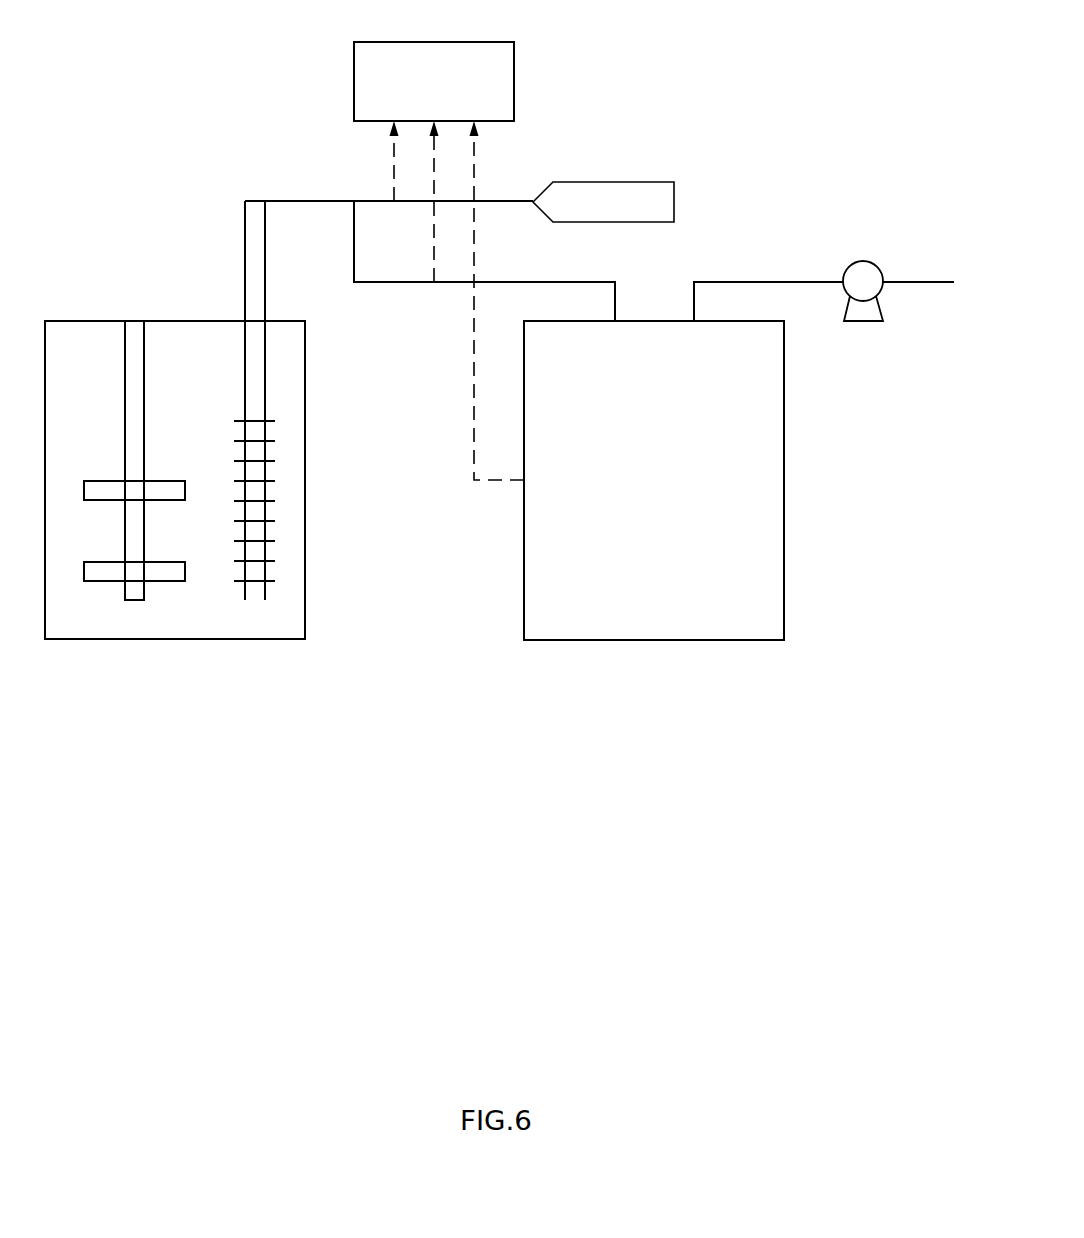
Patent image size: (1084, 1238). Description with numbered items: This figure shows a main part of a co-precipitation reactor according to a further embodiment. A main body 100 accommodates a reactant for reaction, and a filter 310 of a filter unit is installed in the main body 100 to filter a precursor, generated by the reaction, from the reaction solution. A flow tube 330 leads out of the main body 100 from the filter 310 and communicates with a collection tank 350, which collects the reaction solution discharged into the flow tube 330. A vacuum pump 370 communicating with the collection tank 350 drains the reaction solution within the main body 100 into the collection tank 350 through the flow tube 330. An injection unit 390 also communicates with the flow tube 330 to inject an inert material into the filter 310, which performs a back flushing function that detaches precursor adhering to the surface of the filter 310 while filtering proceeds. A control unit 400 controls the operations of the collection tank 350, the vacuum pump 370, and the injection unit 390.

The main body 100 is at (305, 400).
The filter 310 is at (265, 521).
The flow tube 330 is at (245, 240).
The collection tank 350 is at (784, 478).
The vacuum pump 370 is at (863, 261).
The injection unit 390 is at (674, 200).
The control unit 400 is at (514, 78).